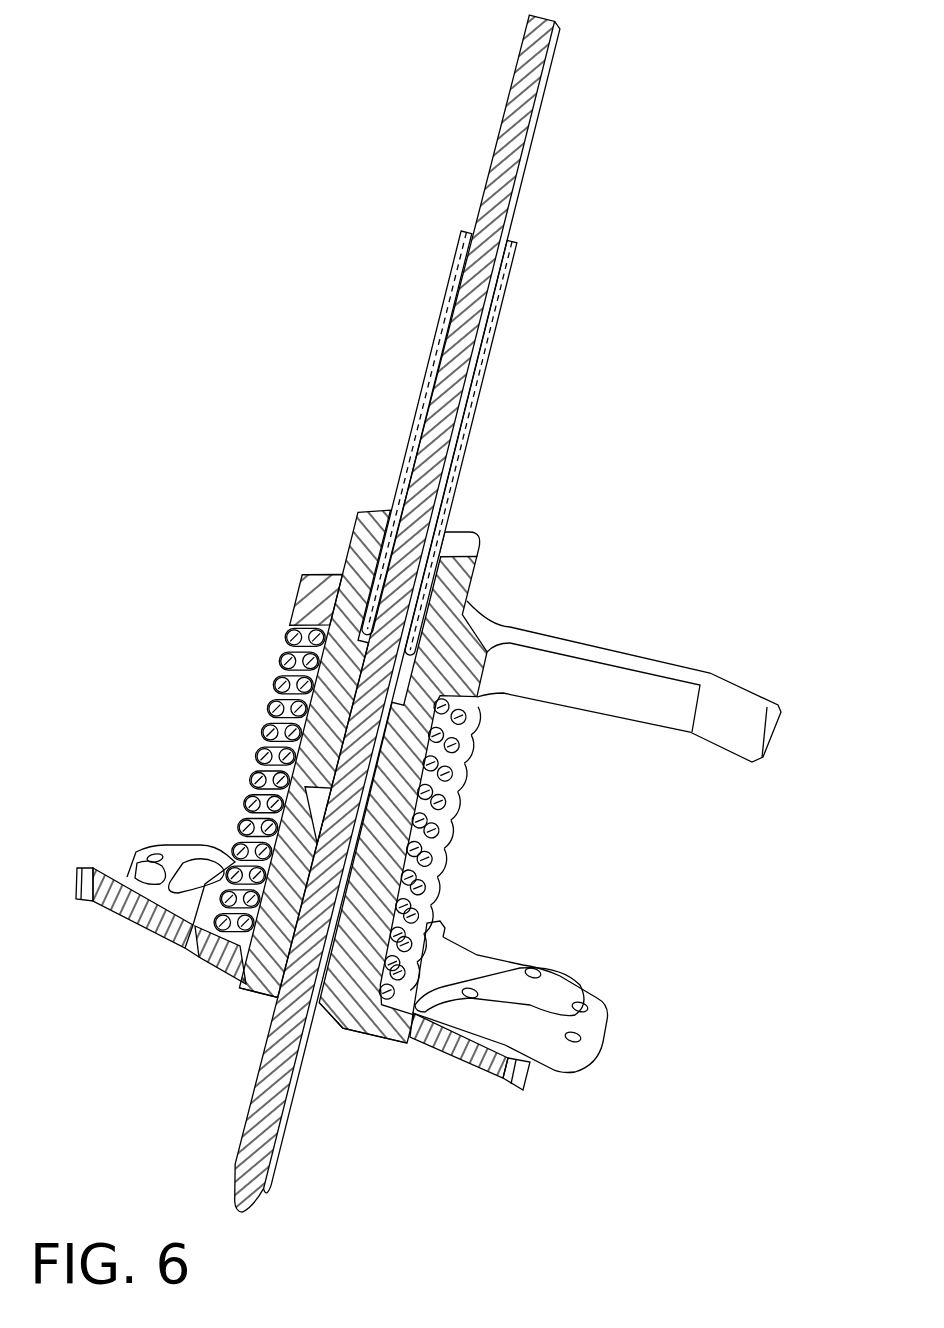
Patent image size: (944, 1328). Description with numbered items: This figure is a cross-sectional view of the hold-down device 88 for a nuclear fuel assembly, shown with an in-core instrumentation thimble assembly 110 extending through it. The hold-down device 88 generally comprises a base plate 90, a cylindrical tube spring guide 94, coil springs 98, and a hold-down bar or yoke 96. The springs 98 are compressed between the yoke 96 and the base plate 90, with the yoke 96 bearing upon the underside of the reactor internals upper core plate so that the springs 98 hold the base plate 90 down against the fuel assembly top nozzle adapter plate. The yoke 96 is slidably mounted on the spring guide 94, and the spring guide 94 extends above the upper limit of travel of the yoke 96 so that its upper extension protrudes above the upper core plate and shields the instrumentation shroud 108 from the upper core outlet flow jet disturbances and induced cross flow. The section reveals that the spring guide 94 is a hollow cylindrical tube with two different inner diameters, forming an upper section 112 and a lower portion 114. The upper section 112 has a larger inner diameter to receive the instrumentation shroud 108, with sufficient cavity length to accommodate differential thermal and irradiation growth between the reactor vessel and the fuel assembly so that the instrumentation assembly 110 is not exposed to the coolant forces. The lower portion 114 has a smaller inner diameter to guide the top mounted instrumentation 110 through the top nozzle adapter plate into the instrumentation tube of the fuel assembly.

The hold-down device 88 is at (598, 606).
The base plate 90 is at (585, 985).
The spring guide 94 is at (472, 530).
The yoke 96 is at (300, 605).
The springs 98 is at (440, 847).
The instrumentation shroud 108 is at (432, 372).
The in-core instrumentation thimble assembly 110 is at (496, 165).
The upper section 112 is at (385, 772).
The lower portion 114 is at (343, 1028).